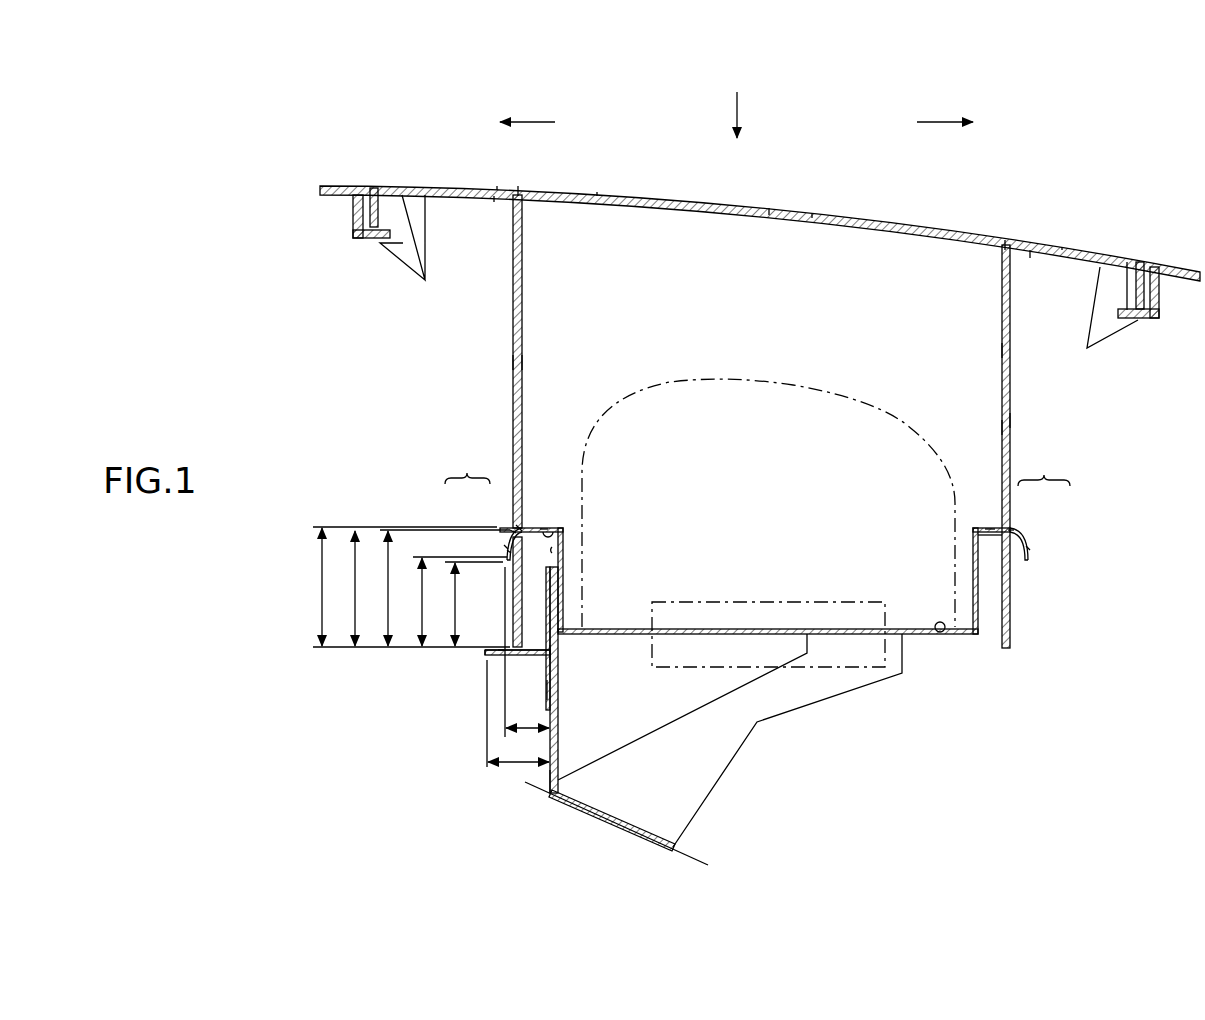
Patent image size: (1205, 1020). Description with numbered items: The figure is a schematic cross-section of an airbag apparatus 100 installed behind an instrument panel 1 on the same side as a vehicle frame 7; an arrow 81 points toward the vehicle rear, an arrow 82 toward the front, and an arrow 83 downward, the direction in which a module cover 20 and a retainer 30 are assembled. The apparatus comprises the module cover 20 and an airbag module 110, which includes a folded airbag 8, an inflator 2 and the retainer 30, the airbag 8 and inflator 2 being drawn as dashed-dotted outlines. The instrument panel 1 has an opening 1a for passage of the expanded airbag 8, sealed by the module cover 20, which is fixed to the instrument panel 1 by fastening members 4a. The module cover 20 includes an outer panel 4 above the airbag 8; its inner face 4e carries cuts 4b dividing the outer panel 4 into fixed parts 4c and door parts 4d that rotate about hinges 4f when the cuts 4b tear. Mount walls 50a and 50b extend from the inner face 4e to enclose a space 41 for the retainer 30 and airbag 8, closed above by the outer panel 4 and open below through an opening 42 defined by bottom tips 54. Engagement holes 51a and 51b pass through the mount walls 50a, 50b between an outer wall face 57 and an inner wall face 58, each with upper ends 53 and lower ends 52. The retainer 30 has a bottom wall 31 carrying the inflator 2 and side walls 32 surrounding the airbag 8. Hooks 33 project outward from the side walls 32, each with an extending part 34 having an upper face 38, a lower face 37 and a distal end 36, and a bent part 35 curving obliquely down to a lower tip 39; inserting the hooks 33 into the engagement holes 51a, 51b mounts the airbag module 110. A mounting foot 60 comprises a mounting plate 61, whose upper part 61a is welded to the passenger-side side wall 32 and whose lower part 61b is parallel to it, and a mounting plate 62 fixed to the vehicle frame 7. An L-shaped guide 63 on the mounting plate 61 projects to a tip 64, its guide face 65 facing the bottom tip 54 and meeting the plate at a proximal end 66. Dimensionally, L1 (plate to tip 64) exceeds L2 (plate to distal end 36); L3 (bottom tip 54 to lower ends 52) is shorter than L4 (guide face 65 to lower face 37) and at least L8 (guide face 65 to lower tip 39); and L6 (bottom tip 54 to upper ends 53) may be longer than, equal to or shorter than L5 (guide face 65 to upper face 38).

The airbag apparatus 100 is at (313, 121).
The instrument panel 1 is at (357, 185).
The opening 1a is at (392, 236).
The inflator 2 is at (684, 667).
The outer panel 4 is at (850, 240).
The fastening members 4a is at (408, 258).
The cuts 4b is at (769, 213).
The fixed parts 4c is at (497, 186).
The door parts 4d is at (597, 192).
The inner face 4e is at (494, 200).
The hinges 4f is at (518, 190).
The vehicle frame 7 is at (700, 862).
The airbag 8 is at (671, 381).
The module cover 20 is at (657, 186).
The retainer 30 is at (595, 634).
The bottom wall 31 is at (940, 633).
The side walls 32 is at (563, 548).
The hooks 33 is at (757, 467).
The extending part 34 is at (512, 530).
The bent part 35 is at (509, 552).
The distal end 36 is at (505, 548).
The lower face 37 is at (556, 532).
The upper face 38 is at (545, 530).
The lower tip 39 is at (507, 560).
The space 41 is at (988, 350).
The opening 42 is at (637, 656).
The mount wall 50a is at (514, 322).
The mount wall 50b is at (1011, 388).
The engagement holes 51a is at (522, 527).
The engagement holes 51b is at (1027, 560).
The lower ends 52 is at (522, 570).
The upper ends 53 is at (520, 528).
The bottom tip 54 is at (515, 656).
The outer wall face 57 is at (513, 362).
The inner wall face 58 is at (523, 362).
The mounting foot 60 is at (558, 712).
The mounting plate 61 is at (550, 778).
The upper part 61a is at (558, 600).
The lower part 61b is at (556, 690).
The mounting plate 62 is at (592, 818).
The guide 63 is at (486, 656).
The tip 64 is at (487, 652).
The guide face 65 is at (500, 650).
The proximal end 66 is at (550, 650).
The arrow 81 is at (530, 122).
The arrow 82 is at (935, 122).
The arrow 83 is at (740, 116).
The airbag module 110 is at (951, 700).
The distance L1 is at (518, 713).
The distance L2 is at (527, 715).
The distance L3 is at (450, 601).
The distance L4 is at (374, 588).
The distance L5 is at (419, 588).
The distance L6 is at (403, 587).
The distance L8 is at (465, 604).